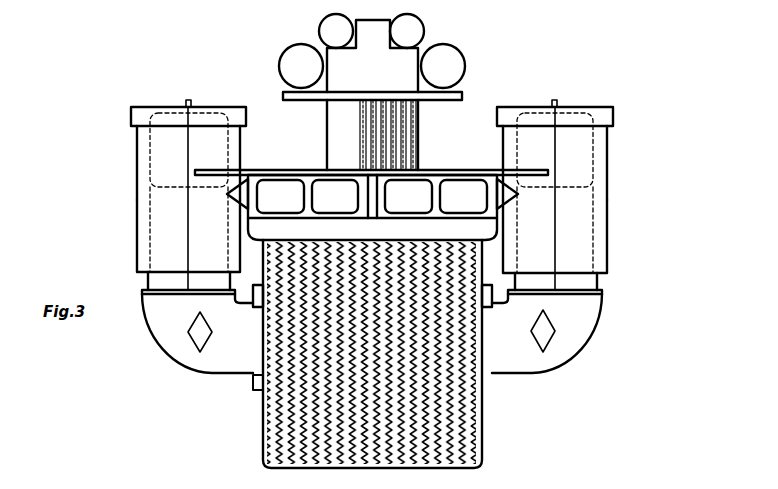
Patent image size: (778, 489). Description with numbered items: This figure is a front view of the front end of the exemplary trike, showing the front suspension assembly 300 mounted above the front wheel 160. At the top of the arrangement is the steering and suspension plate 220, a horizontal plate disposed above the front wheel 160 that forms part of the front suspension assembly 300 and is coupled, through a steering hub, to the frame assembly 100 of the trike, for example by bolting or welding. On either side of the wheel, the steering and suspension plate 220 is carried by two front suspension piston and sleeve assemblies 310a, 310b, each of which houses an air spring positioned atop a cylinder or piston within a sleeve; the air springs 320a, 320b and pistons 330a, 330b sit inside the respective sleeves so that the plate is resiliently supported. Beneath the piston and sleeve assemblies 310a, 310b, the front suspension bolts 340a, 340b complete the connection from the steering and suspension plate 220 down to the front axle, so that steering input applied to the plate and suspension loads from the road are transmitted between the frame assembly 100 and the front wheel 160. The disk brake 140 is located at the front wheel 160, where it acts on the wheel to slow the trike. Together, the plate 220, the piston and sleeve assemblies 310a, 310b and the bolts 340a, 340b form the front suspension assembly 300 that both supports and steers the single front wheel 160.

The frame assembly 100 is at (487, 66).
The front suspension assembly 300 is at (485, 99).
The steering and suspension plate 220 is at (265, 170).
The suspension piston and sleeve assembly 310a is at (614, 116).
The suspension piston and sleeve assembly 310b is at (131, 114).
The first cylinder upper chamber 320a is at (593, 155).
The second cylinder upper chamber 320b is at (150, 153).
The first cylinder lower chamber 330a is at (595, 221).
The second cylinder lower chamber 330b is at (150, 218).
The suspension bolt 340a is at (530, 367).
The suspension bolt 340b is at (210, 365).
The disk brake 140 is at (252, 384).
The front wheel 160 is at (483, 435).